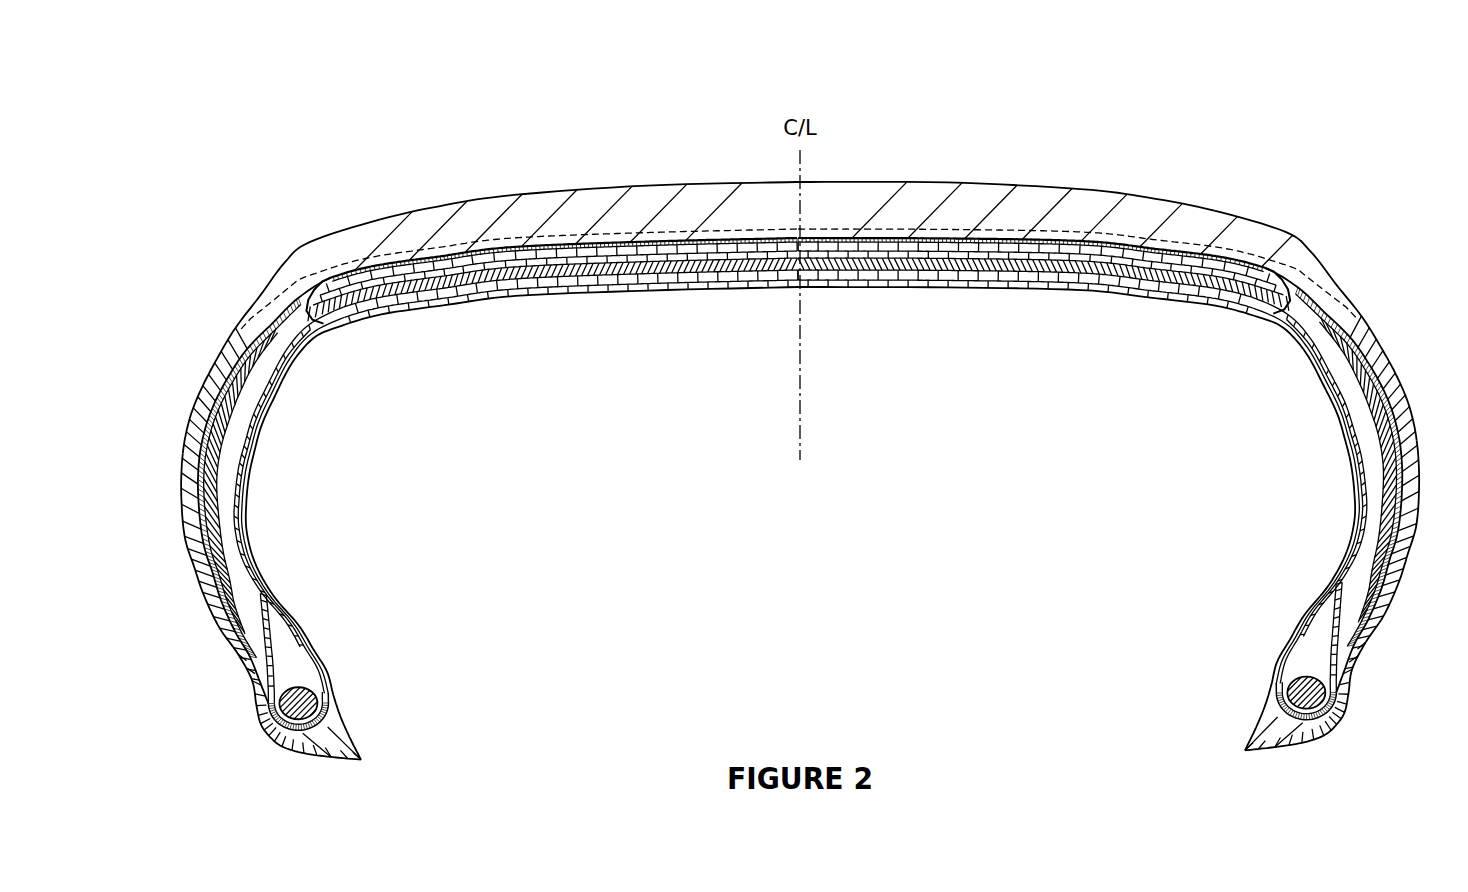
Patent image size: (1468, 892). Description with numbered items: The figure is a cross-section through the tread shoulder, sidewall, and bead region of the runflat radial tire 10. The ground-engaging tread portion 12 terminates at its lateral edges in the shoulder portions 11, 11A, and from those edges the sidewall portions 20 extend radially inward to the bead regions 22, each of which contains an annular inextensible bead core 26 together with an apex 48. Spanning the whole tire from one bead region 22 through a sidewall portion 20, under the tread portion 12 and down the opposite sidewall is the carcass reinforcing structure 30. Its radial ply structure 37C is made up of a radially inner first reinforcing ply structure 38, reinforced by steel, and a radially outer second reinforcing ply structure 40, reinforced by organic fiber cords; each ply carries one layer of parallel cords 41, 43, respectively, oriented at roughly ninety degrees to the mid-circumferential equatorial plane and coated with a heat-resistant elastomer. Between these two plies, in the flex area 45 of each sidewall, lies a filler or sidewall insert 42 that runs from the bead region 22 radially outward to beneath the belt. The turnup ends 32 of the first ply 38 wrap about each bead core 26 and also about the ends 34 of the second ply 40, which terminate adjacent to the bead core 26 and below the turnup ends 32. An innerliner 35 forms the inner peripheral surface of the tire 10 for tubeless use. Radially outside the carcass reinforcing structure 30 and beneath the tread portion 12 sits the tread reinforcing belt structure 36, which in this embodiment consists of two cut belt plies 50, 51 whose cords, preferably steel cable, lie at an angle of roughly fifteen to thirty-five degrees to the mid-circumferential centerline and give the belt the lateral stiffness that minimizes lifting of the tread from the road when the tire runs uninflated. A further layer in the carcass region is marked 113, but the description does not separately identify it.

The tire 10 is at (800, 440).
The shoulder portion 11 is at (1294, 254).
The shoulder portion 11A is at (274, 278).
The tread portion 12 is at (797, 232).
The sidewall portion 20 is at (800, 514).
The bead region 22 is at (801, 643).
The bead core 26 is at (802, 699).
The carcass reinforcing structure 30 is at (1043, 301).
The turnup ends 32 is at (801, 634).
The ends of the second ply 34 is at (800, 698).
The innerliner 35 is at (800, 455).
The tread reinforcing belt structure 36 is at (798, 234).
The carcass ply 37C is at (552, 319).
The first reinforcing ply structure 38 is at (800, 456).
The second reinforcing ply structure 40 is at (802, 475).
The parallel cords 41 is at (800, 484).
The sidewall insert 42 is at (804, 539).
The parallel cords 43 is at (802, 485).
The flex area 45 is at (808, 548).
The apex 48 is at (801, 640).
The belt ply 50 is at (798, 221).
The belt ply 51 is at (798, 229).
The carcass ply 113 is at (798, 330).